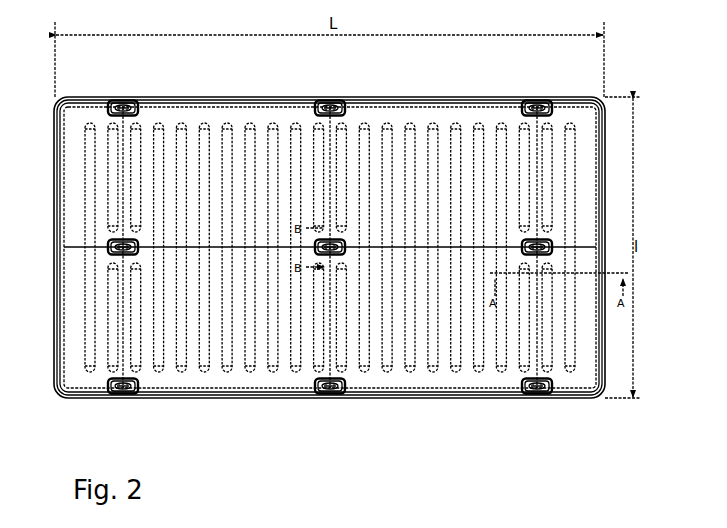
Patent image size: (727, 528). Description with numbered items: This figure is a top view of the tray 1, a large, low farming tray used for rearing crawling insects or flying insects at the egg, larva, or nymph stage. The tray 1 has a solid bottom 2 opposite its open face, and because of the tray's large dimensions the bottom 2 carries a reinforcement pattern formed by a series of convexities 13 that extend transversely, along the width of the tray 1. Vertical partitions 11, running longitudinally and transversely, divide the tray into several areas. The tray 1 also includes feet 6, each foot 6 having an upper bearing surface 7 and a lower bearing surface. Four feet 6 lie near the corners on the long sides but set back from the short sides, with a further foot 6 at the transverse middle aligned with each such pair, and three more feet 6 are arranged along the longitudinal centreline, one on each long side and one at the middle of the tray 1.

The tray 1 is at (89, 437).
The bottom 2 is at (262, 127).
The foot 6 is at (128, 99).
The upper bearing surface 7 is at (108, 98).
The vertical partition 11 is at (240, 116).
The convexity 13 is at (465, 125).